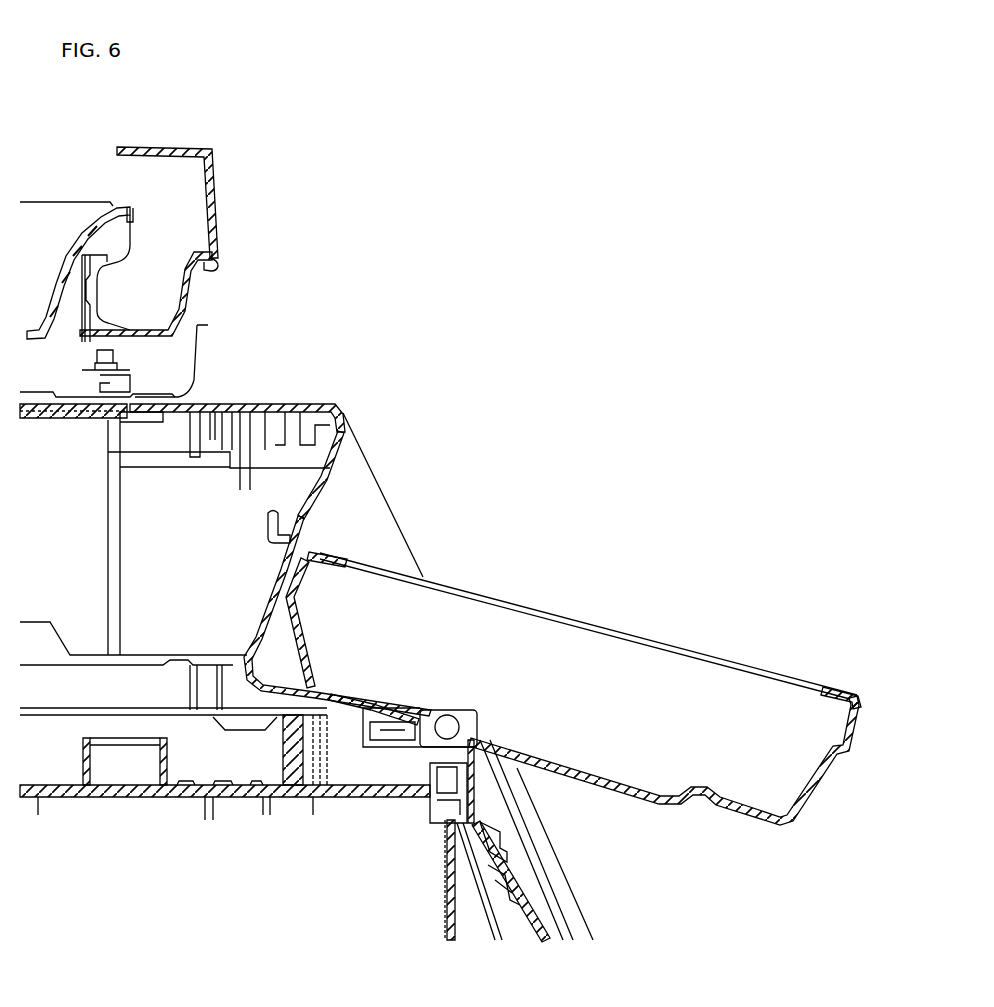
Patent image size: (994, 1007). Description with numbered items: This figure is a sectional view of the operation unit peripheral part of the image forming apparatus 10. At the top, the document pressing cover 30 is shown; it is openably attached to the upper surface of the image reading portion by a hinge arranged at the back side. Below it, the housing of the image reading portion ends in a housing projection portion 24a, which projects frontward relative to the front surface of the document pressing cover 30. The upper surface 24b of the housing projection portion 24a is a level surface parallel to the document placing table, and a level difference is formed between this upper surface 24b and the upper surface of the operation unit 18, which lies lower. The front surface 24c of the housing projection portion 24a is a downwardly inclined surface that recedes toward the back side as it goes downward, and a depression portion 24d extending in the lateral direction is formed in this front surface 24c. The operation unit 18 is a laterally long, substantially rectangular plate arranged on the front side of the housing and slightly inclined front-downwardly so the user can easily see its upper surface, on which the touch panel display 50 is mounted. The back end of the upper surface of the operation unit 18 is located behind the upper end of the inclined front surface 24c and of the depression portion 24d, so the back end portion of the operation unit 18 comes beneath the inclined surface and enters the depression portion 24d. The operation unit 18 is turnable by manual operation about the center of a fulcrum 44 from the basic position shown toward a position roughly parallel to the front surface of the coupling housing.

The image forming apparatus 10 is at (137, 110).
The document pressing cover 30 is at (212, 242).
The housing projection portion 24a is at (347, 406).
The upper surface 24b is at (237, 405).
The front surface 24c is at (326, 487).
The depression portion 24d is at (312, 518).
The touch panel display 50 is at (722, 662).
The operation unit 18 is at (742, 815).
The fulcrum 44 is at (445, 730).